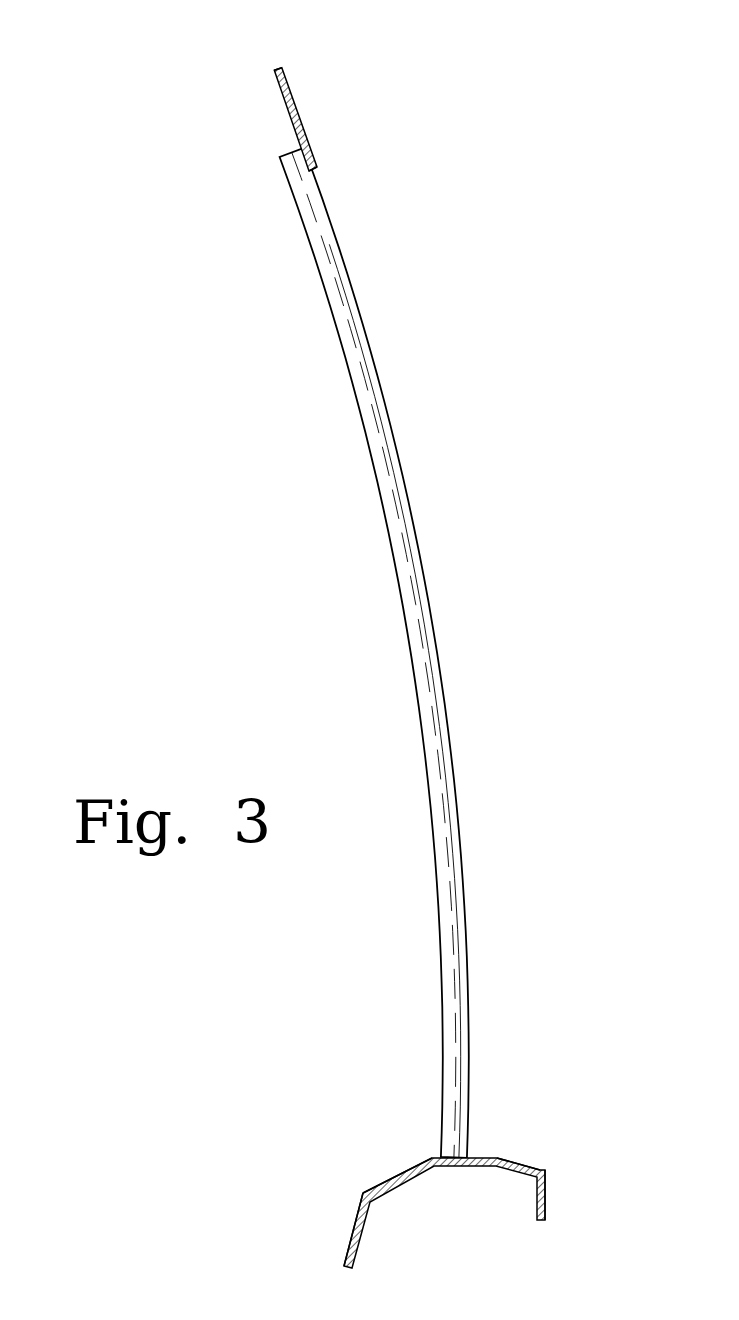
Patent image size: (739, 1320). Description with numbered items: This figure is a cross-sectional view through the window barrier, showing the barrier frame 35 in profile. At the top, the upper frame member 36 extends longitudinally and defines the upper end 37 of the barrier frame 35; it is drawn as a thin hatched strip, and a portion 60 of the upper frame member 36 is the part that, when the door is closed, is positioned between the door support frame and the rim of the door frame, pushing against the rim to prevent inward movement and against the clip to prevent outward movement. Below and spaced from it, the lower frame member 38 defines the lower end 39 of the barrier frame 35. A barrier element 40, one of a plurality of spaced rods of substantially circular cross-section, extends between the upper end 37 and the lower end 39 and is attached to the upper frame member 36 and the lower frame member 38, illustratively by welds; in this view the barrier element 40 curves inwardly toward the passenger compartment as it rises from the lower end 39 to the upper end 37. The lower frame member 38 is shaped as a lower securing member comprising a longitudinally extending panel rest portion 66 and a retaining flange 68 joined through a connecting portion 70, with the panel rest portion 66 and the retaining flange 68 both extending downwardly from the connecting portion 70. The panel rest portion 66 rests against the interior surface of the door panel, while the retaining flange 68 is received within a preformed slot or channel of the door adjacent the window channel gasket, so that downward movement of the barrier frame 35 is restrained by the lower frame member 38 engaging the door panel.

The barrier frame 35 is at (308, 120).
The upper frame member 36 is at (314, 157).
The upper end 37 is at (331, 89).
The lower frame member 38 is at (545, 1182).
The lower end 39 is at (478, 1196).
The barrier element 40 is at (438, 657).
The portion of upper frame member 60 is at (282, 93).
The panel rest portion 66 is at (351, 1238).
The retaining flange 68 is at (545, 1203).
The connecting portion 70 is at (414, 1167).